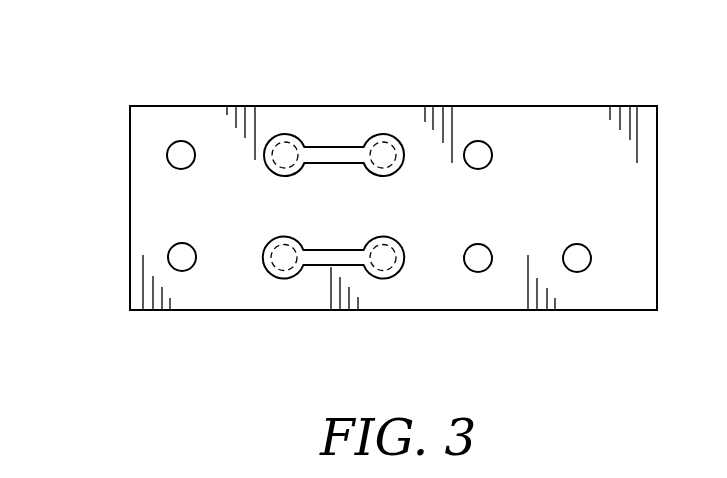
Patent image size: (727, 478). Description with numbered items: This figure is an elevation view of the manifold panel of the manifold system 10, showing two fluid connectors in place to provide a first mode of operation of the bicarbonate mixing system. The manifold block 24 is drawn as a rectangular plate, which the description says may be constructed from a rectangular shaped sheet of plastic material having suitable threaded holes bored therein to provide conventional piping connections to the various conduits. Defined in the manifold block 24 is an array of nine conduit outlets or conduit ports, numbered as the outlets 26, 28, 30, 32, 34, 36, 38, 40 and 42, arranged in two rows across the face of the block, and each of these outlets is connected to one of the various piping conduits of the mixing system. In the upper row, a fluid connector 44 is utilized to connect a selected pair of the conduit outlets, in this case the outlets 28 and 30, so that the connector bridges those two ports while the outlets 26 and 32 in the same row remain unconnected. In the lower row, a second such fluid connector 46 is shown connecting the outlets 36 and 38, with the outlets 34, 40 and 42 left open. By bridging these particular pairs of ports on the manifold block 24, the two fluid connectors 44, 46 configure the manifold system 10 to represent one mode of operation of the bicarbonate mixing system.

The manifold system 10 is at (345, 208).
The manifold block 24 is at (142, 234).
The conduit outlet 26 is at (179, 140).
The conduit outlet 28 is at (285, 140).
The conduit outlet 30 is at (383, 140).
The conduit outlet 32 is at (477, 140).
The conduit outlet 34 is at (187, 272).
The conduit outlet 36 is at (290, 278).
The conduit outlet 38 is at (380, 278).
The conduit outlet 40 is at (478, 272).
The conduit outlet 42 is at (577, 272).
The fluid connector 44 is at (351, 100).
The fluid connector 46 is at (318, 304).